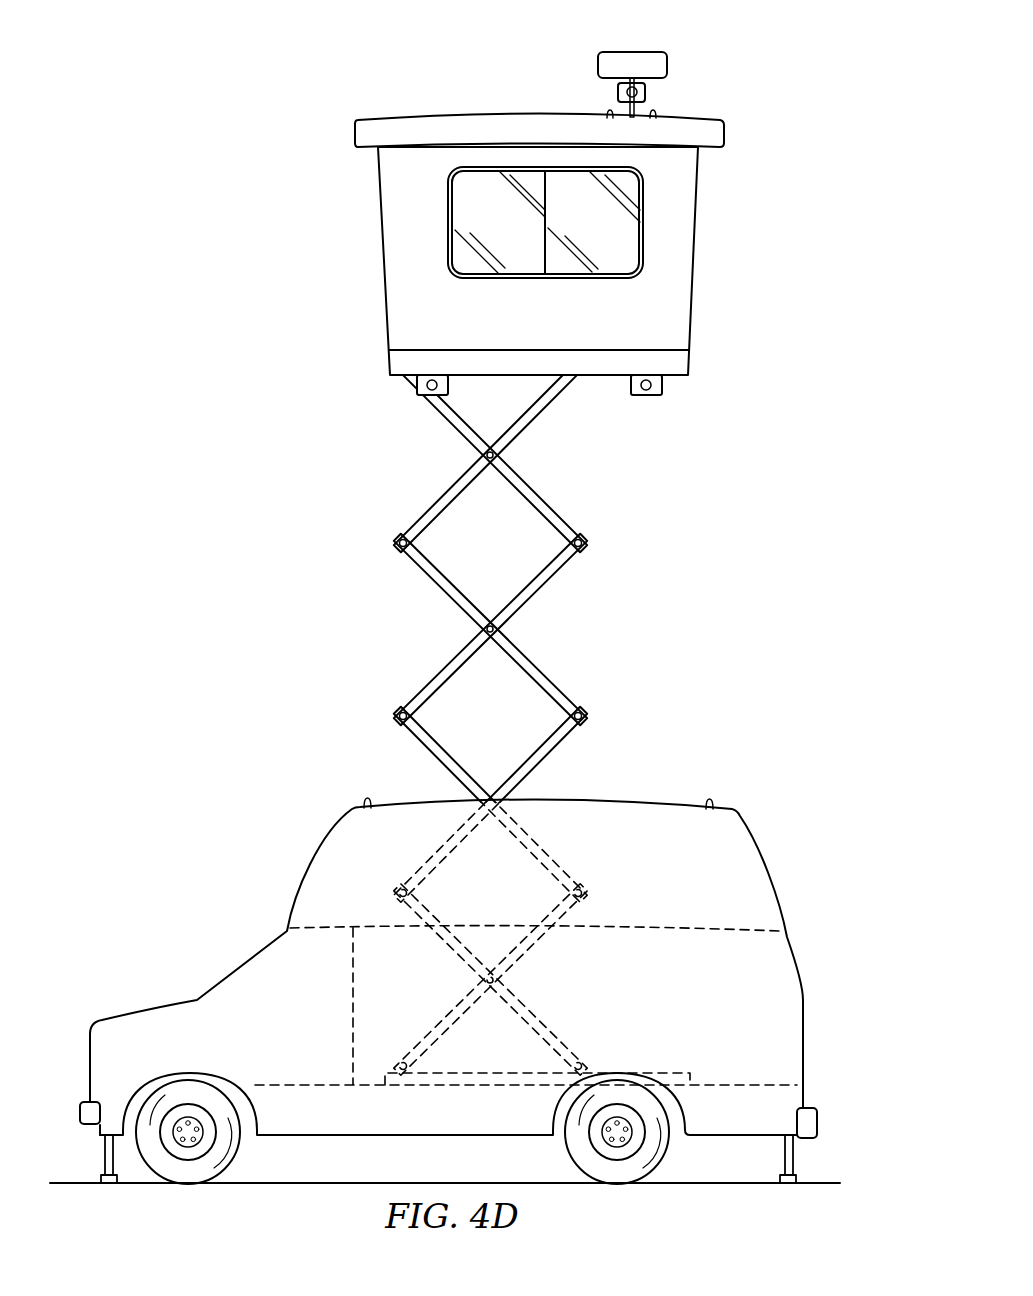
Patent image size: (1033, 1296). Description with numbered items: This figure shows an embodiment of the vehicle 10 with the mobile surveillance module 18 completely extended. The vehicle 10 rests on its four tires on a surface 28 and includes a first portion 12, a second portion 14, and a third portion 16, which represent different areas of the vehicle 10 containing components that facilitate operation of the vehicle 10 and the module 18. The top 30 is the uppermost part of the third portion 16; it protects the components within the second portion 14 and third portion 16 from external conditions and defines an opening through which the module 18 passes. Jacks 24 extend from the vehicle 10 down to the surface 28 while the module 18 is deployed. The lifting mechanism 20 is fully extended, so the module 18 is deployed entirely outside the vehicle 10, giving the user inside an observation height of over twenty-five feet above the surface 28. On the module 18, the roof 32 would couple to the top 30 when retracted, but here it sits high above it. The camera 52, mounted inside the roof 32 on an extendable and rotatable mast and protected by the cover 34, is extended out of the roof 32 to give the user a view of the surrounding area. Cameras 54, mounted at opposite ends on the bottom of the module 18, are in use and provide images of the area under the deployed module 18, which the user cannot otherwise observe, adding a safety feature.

The vehicle 10 is at (220, 108).
The first portion 12 is at (276, 960).
The second portion 14 is at (785, 967).
The third portion 16 is at (767, 866).
The module 18 is at (698, 247).
The lifting mechanism 20 is at (539, 668).
The jacks 24 is at (105, 1151).
The surface 28 is at (830, 1183).
The top 30 is at (727, 810).
The roof 32 is at (540, 113).
The cover 34 is at (635, 52).
The camera 52 is at (646, 92).
The cameras 54 is at (448, 387).